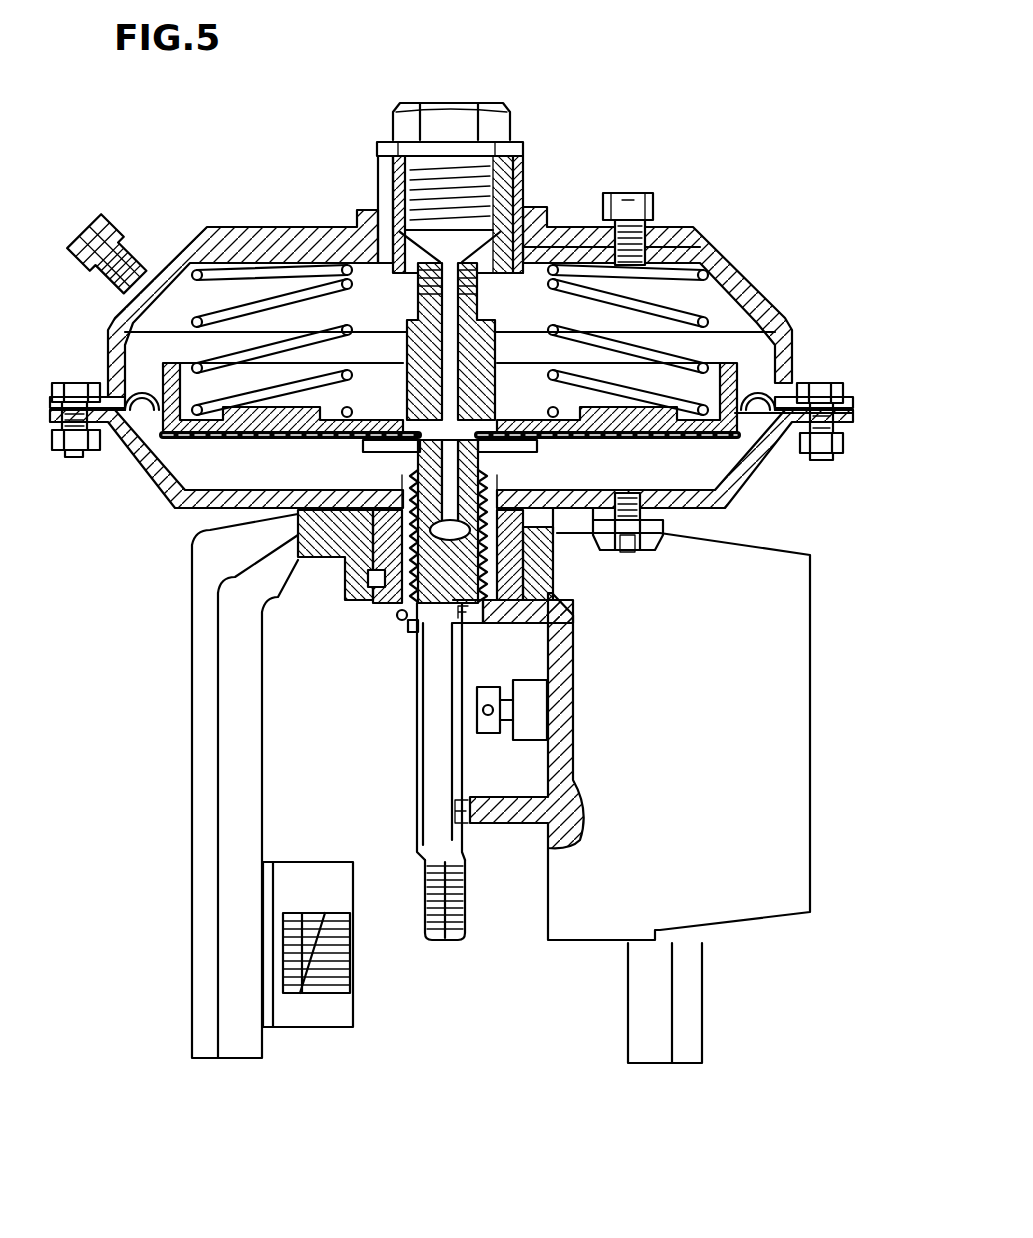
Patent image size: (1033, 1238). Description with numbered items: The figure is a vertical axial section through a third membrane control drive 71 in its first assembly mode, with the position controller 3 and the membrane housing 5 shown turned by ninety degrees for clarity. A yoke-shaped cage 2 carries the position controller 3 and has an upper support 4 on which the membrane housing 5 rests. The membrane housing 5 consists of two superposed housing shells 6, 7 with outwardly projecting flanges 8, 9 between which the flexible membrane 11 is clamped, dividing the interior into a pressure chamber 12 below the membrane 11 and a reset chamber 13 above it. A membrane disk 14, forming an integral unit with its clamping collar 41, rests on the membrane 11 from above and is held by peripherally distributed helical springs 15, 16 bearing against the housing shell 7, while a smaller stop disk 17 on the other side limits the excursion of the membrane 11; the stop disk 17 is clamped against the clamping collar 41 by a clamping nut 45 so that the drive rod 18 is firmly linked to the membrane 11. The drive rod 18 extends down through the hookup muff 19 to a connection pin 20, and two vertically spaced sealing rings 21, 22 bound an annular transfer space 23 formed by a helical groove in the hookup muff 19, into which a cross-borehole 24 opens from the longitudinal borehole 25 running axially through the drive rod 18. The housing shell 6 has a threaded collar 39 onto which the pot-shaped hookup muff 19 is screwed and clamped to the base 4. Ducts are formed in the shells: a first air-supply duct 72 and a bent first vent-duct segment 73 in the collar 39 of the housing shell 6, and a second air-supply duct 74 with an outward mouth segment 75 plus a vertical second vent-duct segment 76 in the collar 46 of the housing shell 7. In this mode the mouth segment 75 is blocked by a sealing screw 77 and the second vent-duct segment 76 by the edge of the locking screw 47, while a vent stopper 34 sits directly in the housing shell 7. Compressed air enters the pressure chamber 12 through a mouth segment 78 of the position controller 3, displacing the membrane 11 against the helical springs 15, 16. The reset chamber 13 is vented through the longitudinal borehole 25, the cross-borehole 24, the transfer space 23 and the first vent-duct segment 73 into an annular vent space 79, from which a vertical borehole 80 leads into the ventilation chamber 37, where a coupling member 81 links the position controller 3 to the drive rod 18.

The cage 2 is at (230, 960).
The position controller 3 is at (730, 908).
The upper support 4 is at (298, 514).
The membrane housing 5 is at (100, 379).
The housing shell 6 is at (166, 498).
The housing shell 7 is at (240, 242).
The flange 8 is at (60, 424).
The flange 9 is at (52, 408).
The membrane 11 is at (770, 386).
The pressure chamber 12 is at (717, 467).
The reset chamber 13 is at (750, 346).
The membrane disk 14 is at (737, 383).
The helical spring 15 is at (723, 443).
The helical spring 16 is at (112, 328).
The stop disk 17 is at (537, 448).
The drive rod 18 is at (417, 818).
The hookup muff 19 is at (383, 610).
The connection pin 20 is at (468, 938).
The sealing ring 21 is at (400, 480).
The sealing ring 22 is at (413, 630).
The transfer space 23 is at (403, 620).
The cross-borehole 24 is at (446, 604).
The longitudinal borehole 25 is at (407, 222).
The vent stopper 34 is at (106, 250).
The ventilation chamber 37 is at (535, 778).
The collar 39 is at (298, 556).
The clamping collar 41 is at (485, 346).
The clamping nut 45 is at (410, 252).
The collar 46 is at (520, 190).
The locking screw 47 is at (500, 128).
The membrane control drive 71 is at (535, 82).
The first air-supply duct 72 is at (628, 494).
The first vent-duct segment 73 is at (555, 585).
The second air-supply duct 74 is at (595, 252).
The mouth segment 75 is at (645, 224).
The second vent-duct segment 76 is at (388, 166).
The sealing screw 77 is at (625, 196).
The mouth segment 78 is at (635, 545).
The annular vent space 79 is at (364, 606).
The vertical borehole 80 is at (535, 618).
The coupling member 81 is at (538, 710).